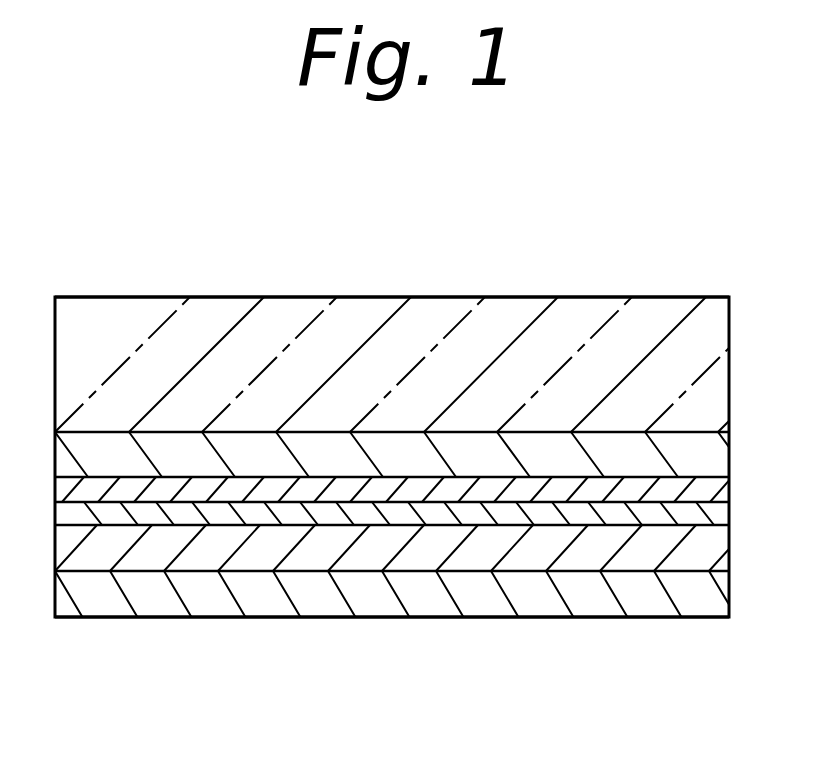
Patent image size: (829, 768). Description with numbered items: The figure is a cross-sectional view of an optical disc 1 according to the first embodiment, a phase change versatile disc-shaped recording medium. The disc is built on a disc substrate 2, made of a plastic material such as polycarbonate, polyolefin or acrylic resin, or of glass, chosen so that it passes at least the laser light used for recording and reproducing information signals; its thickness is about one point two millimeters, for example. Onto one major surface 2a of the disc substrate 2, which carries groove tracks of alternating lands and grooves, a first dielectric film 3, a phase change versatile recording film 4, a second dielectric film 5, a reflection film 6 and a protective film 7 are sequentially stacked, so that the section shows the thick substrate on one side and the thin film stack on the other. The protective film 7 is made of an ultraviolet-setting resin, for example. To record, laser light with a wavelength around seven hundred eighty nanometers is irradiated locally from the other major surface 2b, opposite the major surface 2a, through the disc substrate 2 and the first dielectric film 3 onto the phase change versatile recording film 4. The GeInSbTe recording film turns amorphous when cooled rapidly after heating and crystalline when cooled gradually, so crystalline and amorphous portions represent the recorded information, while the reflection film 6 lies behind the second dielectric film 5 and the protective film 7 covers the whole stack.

The optical disc 1 is at (383, 630).
The disc substrate 2 is at (705, 338).
The major surface 2a is at (687, 433).
The other major surface 2b is at (668, 297).
The first dielectric film 3 is at (710, 468).
The phase change versatile recording film 4 is at (707, 492).
The second dielectric film 5 is at (625, 512).
The reflection film 6 is at (701, 555).
The protective film 7 is at (208, 595).